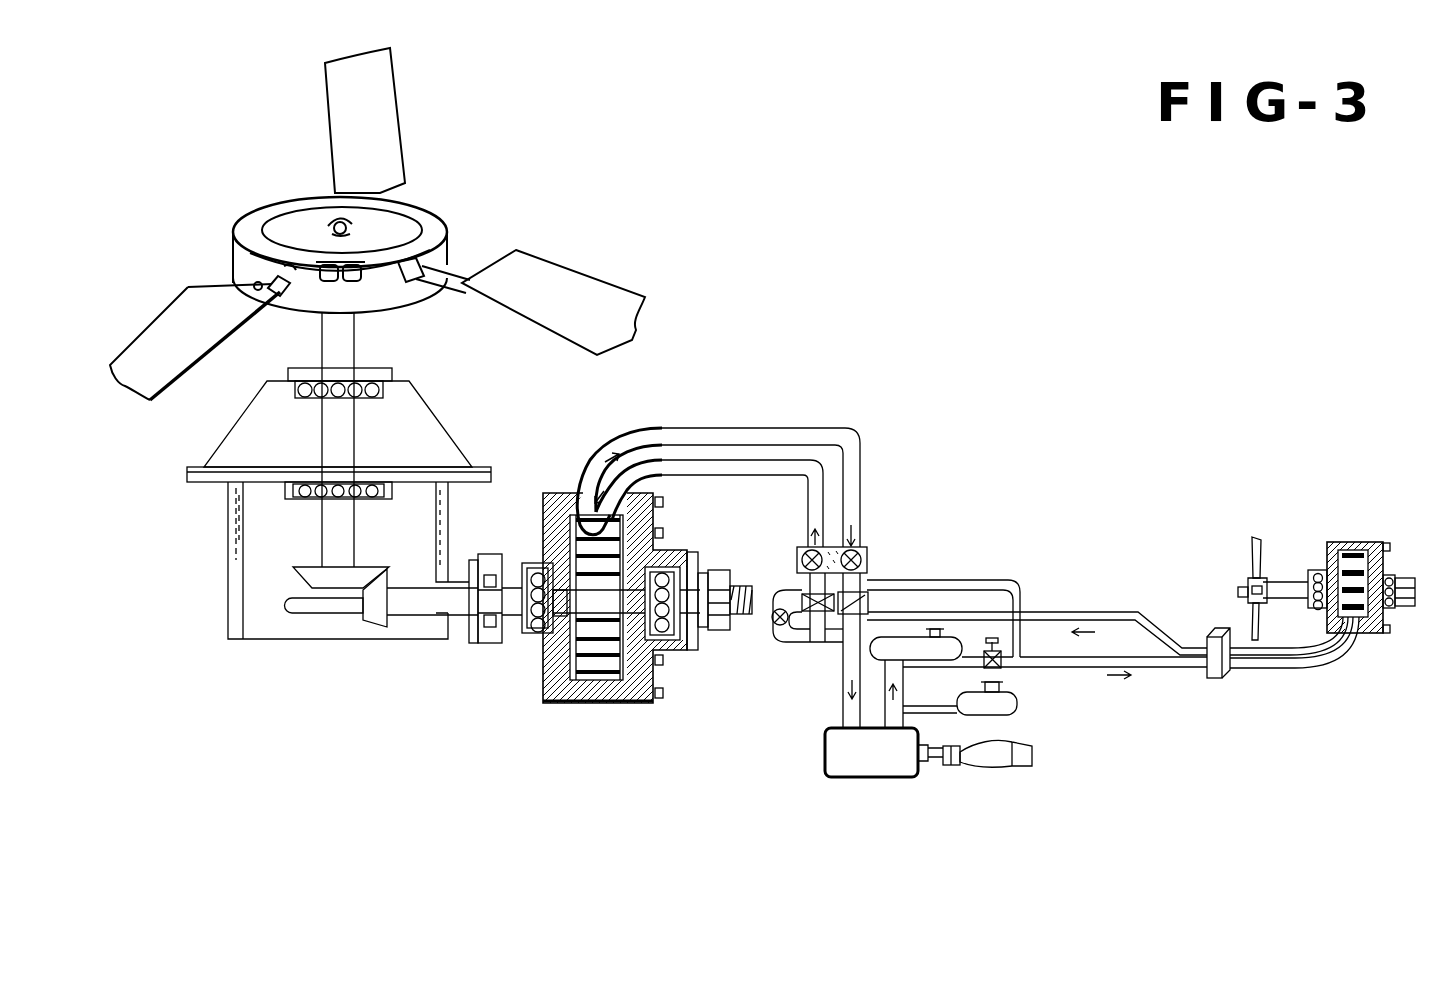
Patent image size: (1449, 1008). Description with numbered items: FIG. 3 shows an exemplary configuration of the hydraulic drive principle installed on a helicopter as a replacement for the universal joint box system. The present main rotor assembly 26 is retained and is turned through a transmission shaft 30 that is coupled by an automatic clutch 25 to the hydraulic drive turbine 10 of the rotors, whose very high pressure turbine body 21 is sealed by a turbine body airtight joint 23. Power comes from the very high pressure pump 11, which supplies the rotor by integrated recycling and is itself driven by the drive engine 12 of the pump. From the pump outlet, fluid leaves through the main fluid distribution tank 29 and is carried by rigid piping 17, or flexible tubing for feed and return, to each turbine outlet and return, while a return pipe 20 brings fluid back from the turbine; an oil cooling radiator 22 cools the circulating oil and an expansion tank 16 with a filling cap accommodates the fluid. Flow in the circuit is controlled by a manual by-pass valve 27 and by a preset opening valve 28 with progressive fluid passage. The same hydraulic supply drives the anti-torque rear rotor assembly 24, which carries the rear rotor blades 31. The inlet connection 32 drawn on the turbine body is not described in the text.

The hydraulic drive turbine 10 is at (542, 683).
The very high pressure pump 11 is at (840, 768).
The drive engine 12 is at (985, 758).
The expansion tank 16 is at (1000, 705).
The rigid piping 17 is at (638, 409).
The return pipe 20 is at (797, 436).
The very high pressure turbine body 21 is at (575, 705).
The oil cooling radiator 22 is at (865, 553).
The turbine body airtight joint 23 is at (641, 703).
The anti-torque rear rotor assembly 24 is at (1247, 583).
The automatic clutch 25 is at (497, 578).
The main rotor assembly 26 is at (262, 435).
The manual by-pass valve 27 is at (776, 620).
The preset opening valve 28 is at (857, 601).
The main fluid distribution tank 29 is at (852, 667).
The transmission shaft 30 is at (419, 601).
The rear rotor blades 31 is at (1255, 540).
The inlet port 32 is at (565, 497).